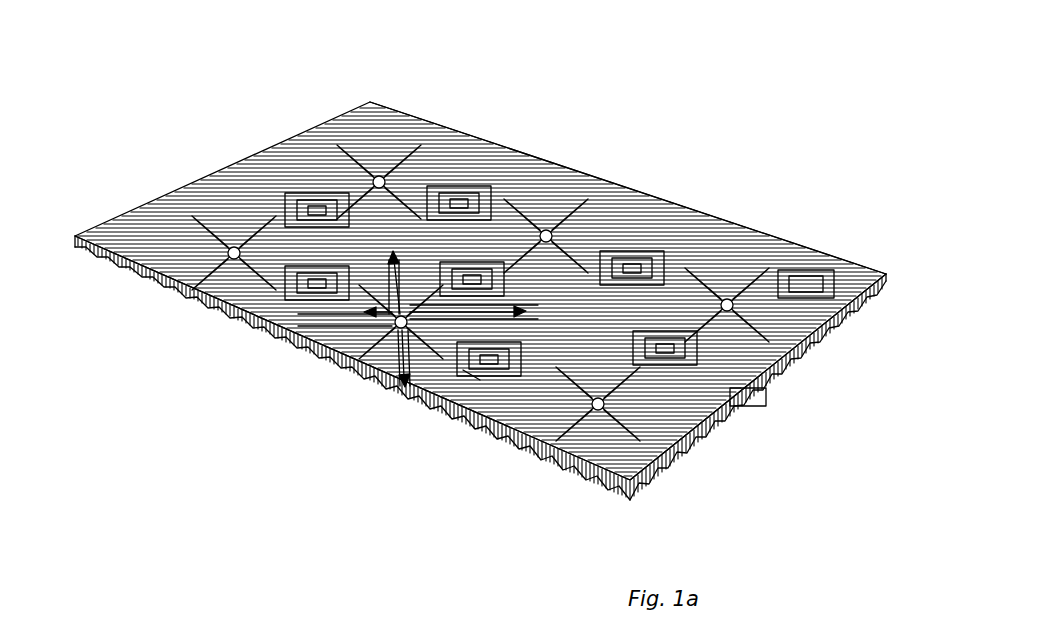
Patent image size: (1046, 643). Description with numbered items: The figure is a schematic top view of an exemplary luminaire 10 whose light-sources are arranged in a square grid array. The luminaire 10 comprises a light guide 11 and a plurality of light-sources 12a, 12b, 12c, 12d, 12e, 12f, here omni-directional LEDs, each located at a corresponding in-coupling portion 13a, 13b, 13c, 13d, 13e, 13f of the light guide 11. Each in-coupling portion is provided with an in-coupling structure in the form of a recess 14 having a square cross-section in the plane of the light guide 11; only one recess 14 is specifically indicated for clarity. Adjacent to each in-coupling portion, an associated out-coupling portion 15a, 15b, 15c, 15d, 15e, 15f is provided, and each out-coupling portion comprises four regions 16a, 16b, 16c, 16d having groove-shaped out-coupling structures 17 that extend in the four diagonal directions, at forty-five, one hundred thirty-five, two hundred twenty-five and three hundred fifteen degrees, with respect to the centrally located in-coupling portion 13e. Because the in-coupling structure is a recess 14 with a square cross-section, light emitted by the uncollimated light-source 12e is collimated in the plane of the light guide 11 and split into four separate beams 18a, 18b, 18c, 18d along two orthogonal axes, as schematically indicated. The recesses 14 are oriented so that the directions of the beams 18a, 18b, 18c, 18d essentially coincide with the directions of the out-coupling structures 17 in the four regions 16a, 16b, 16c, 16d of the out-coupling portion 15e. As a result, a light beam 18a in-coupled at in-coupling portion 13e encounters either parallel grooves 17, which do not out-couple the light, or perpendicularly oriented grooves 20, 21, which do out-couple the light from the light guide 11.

The luminaire 10 is at (708, 124).
The light guide 11 is at (641, 476).
The light-source 12a is at (366, 169).
The light-source 12b is at (534, 224).
The light-source 12c is at (722, 290).
The light-source 12d is at (214, 236).
The light-source 12e is at (386, 318).
The light-source 12f is at (655, 470).
The in-coupling portion 13a is at (380, 168).
The in-coupling portion 13b is at (544, 221).
The in-coupling portion 13c is at (733, 290).
The in-coupling portion 13d is at (238, 237).
The in-coupling portion 13e is at (455, 348).
The in-coupling portion 13f is at (600, 396).
The recess 14 is at (338, 318).
The out-coupling portion 15a is at (405, 170).
The out-coupling portion 15b is at (604, 220).
The out-coupling portion 15c is at (818, 275).
The out-coupling portion 15d is at (308, 232).
The out-coupling portion 15e is at (497, 367).
The out-coupling portion 15f is at (742, 392).
The region 16a is at (460, 364).
The region 16b is at (330, 272).
The region 16c is at (345, 330).
The region 16d is at (360, 350).
The groove-shaped out-coupling structures 17 is at (542, 445).
The light beam 18a is at (520, 293).
The light beam 18b is at (398, 282).
The light beam 18c is at (300, 312).
The light beam 18d is at (383, 388).
The perpendicularly oriented grooves 20 is at (558, 247).
The perpendicularly oriented grooves 21 is at (772, 341).